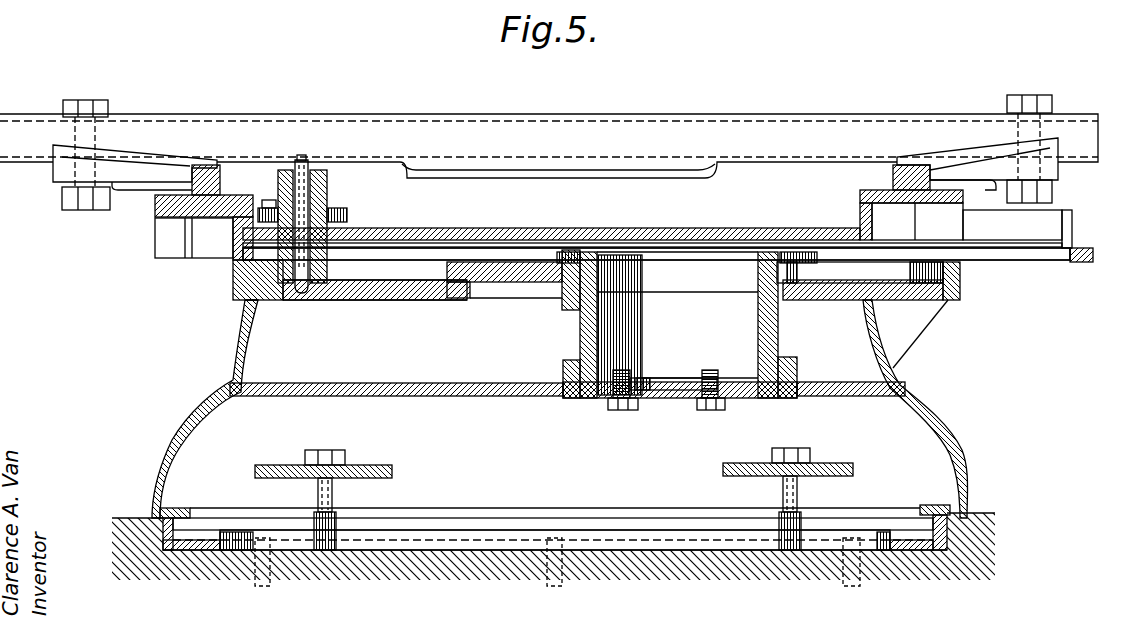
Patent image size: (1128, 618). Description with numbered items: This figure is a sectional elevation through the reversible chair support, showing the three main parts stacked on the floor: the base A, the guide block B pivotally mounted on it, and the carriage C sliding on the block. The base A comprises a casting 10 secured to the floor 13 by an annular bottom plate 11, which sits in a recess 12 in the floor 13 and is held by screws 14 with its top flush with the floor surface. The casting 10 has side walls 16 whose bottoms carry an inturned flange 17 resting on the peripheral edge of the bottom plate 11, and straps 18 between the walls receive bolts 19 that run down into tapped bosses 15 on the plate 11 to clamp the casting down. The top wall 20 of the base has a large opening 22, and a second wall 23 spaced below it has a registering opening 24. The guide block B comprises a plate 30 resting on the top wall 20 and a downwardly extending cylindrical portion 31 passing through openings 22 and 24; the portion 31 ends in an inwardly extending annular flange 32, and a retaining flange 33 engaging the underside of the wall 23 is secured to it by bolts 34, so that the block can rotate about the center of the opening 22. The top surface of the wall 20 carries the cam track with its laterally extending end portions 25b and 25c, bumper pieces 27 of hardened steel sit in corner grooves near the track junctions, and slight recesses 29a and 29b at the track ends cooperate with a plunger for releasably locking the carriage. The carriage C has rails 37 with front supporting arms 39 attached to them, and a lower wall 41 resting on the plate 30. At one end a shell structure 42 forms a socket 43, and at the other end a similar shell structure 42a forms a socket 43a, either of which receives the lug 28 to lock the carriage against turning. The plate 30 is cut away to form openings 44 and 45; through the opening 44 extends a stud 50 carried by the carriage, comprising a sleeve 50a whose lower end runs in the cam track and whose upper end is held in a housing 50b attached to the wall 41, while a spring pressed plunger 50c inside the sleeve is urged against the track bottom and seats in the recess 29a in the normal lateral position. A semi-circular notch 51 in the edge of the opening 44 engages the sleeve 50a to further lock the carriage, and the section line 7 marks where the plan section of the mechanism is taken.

The rail 37 is at (167, 127).
The front supporting arm 39 is at (187, 158).
The shell structure 42 is at (204, 212).
The socket 43 is at (263, 193).
The shell structure 42a is at (860, 190).
The socket 43a is at (917, 221).
The opening 45 is at (817, 253).
The lug 28 is at (165, 238).
The spring pressed plunger 50c is at (233, 377).
The semi-circular notch 51 is at (245, 299).
The housing 50b is at (328, 190).
The sleeve or roller 50a is at (330, 210).
The stud 50 is at (300, 262).
The opening 44 is at (402, 255).
The lower wall 41 is at (480, 240).
The plate 30 is at (541, 256).
The bumper piece 27 is at (437, 282).
The end portion of cam track 25b is at (375, 313).
The recess 29a is at (303, 307).
The top wall 20 is at (508, 272).
The opening 22 is at (562, 293).
The cylindrical portion 31 is at (580, 328).
The opening 24 is at (560, 368).
The second wall 23 is at (397, 387).
The retaining flange 33 is at (584, 400).
The bolt 34 is at (620, 412).
The annular flange 32 is at (683, 377).
The recess 29b is at (813, 305).
The end portion of cam track 25c is at (863, 304).
The casting 10 is at (893, 368).
The base A is at (945, 415).
The side wall 16 is at (950, 443).
The inturned flange 17 is at (178, 510).
The tapped boss 15 is at (380, 520).
The recess 12 is at (947, 537).
The bottom plate 11 is at (667, 545).
The screw 14 is at (253, 573).
The floor 13 is at (165, 563).
The strap 18 is at (381, 462).
The bolt 19 is at (334, 492).
The section line 7 is at (138, 203).
The carriage C is at (950, 231).
The guide block B is at (1052, 237).